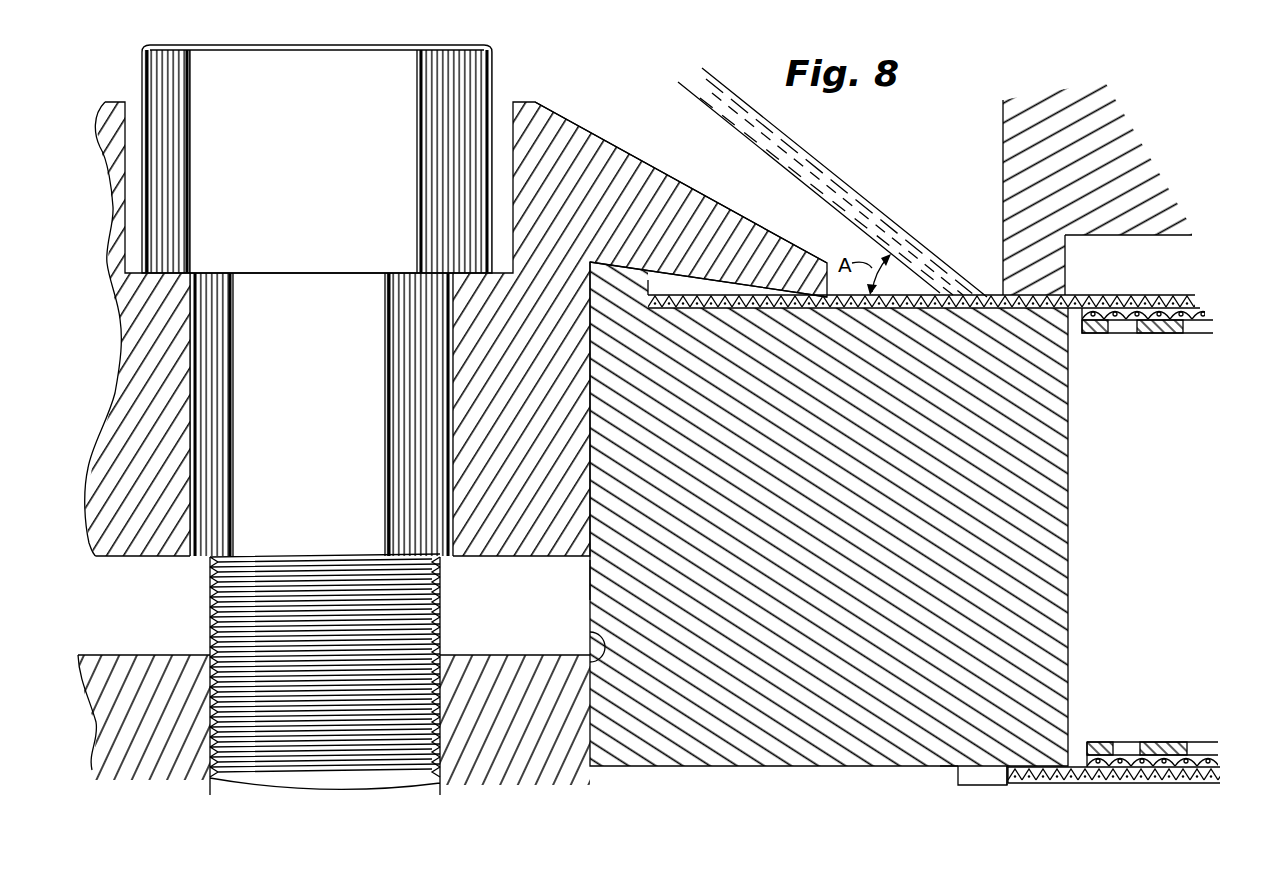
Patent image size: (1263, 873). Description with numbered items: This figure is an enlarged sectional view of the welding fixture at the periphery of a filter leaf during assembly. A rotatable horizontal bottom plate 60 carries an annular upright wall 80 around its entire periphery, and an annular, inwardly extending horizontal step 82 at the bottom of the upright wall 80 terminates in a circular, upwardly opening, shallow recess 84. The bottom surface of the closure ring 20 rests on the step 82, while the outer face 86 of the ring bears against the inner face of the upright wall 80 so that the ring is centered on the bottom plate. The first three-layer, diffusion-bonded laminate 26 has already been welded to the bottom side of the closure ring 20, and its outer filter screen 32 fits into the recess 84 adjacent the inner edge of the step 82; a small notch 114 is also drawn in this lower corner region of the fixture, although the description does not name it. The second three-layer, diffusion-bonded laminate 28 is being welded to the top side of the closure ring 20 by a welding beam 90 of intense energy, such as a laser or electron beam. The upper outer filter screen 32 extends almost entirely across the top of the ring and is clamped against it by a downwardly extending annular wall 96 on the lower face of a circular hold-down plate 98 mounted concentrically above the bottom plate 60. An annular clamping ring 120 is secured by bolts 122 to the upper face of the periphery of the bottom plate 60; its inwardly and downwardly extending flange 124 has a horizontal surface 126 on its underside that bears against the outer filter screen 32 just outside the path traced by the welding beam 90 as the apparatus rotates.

The closure ring 20 is at (1075, 519).
The first three-layer, diffusion-bonded laminate 26 is at (1156, 742).
The second three-layer, diffusion-bonded laminate 28 is at (1144, 340).
The outer filter screen 32 is at (648, 296).
The bottom plate 60 is at (172, 655).
The upright wall 80 is at (590, 627).
The horizontal step 82 is at (952, 766).
The recess 84 is at (1008, 768).
The outer face 86 is at (590, 590).
The welding beam 90 is at (852, 179).
The annular wall 96 is at (1065, 273).
The hold-down plate 98 is at (1003, 148).
The recess 114 is at (1002, 770).
The clamping ring 120 is at (513, 100).
The bolts 122 is at (408, 42).
The flange 124 is at (727, 209).
The horizontal surface 126 is at (803, 294).